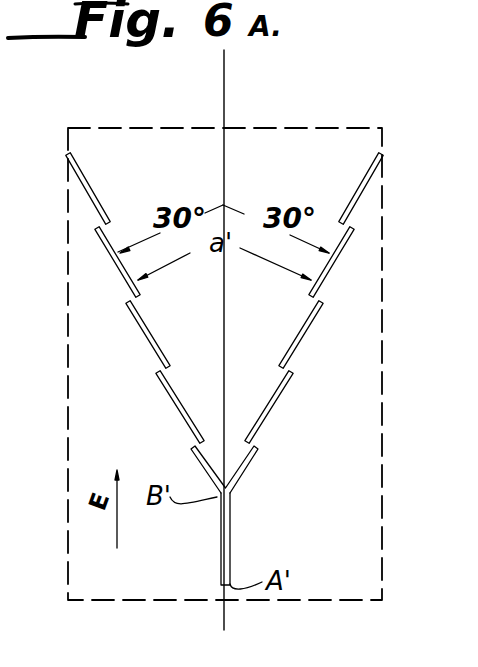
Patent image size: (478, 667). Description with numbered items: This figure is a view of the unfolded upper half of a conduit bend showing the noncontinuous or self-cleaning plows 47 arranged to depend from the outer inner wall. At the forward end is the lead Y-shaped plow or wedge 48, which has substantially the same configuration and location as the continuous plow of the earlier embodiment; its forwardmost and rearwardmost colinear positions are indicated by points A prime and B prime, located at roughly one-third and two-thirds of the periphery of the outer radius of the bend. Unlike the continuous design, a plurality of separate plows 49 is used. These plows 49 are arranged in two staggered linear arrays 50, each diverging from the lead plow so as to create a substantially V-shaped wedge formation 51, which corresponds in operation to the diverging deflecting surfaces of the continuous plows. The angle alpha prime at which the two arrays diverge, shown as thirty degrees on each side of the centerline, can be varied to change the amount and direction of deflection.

The noncontinuous or self-cleaning plows 47 is at (201, 369).
The lead Y-shaped plow or wedge 48 is at (220, 553).
The plows 49 is at (201, 306).
The staggered linear arrays 50 is at (187, 415).
The V-shaped wedge formation 51 is at (152, 397).